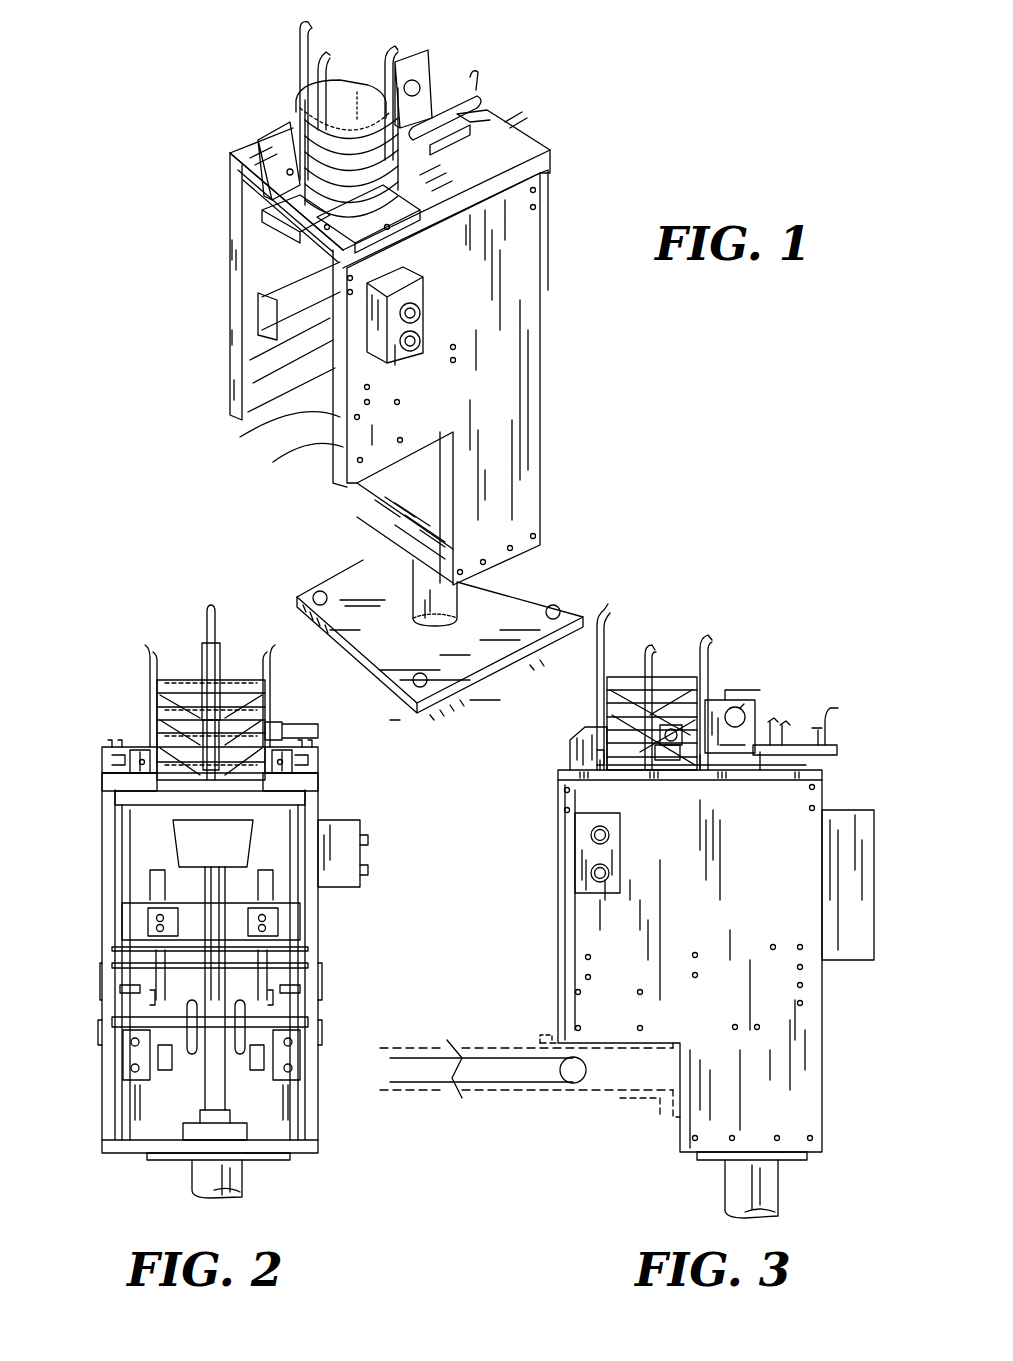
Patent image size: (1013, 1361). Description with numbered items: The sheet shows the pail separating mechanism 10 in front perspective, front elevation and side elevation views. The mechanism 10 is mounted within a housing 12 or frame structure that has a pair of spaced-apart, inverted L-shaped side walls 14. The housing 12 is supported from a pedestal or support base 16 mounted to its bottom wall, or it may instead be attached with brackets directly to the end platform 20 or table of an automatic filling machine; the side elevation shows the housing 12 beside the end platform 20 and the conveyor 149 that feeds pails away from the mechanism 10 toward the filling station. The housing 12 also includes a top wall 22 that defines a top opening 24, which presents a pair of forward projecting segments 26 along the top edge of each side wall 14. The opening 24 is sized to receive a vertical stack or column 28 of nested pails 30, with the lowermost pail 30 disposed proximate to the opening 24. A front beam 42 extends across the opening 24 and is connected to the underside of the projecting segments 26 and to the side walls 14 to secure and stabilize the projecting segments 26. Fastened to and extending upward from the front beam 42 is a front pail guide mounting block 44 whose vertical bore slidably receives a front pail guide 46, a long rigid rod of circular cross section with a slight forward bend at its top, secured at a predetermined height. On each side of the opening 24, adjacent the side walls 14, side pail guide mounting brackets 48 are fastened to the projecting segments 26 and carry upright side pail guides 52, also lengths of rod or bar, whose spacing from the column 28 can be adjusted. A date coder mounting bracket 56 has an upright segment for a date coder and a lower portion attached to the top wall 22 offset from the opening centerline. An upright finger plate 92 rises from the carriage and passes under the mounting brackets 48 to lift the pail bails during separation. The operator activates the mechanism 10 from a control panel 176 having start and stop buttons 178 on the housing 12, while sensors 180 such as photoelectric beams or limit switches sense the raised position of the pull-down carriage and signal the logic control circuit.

In FIG. 1, the pail separating mechanism 10 is at (600, 112).
In FIG. 1, the housing 12 is at (552, 361).
In FIG. 2, the housing 12 is at (326, 1125).
In FIG. 3, the housing 12 is at (836, 1052).
In FIG. 1, the side walls 14 is at (291, 280).
In FIG. 2, the side walls 14 is at (108, 890).
In FIG. 3, the side walls 14 is at (735, 900).
In FIG. 1, the support base 16 is at (452, 599).
In FIG. 2, the support base 16 is at (230, 1175).
In FIG. 3, the support base 16 is at (775, 1188).
In FIG. 3, the end platform 20 is at (636, 1078).
In FIG. 1, the top wall 22 is at (513, 172).
In FIG. 3, the top wall 22 is at (813, 775).
In FIG. 1, the top opening 24 is at (263, 188).
In FIG. 2, the top opening 24 is at (133, 778).
In FIG. 1, the forward projecting segments 26 is at (262, 150).
In FIG. 2, the forward projecting segments 26 is at (107, 778).
In FIG. 3, the forward projecting segments 26 is at (610, 778).
In FIG. 1, the column 28 is at (364, 66).
In FIG. 2, the column 28 is at (172, 660).
In FIG. 3, the column 28 is at (676, 648).
In FIG. 2, the pails 30 is at (233, 707).
In FIG. 1, the front beam 42 is at (268, 220).
In FIG. 2, the front beam 42 is at (174, 807).
In FIG. 1, the front pail guide mounting block 44 is at (260, 158).
In FIG. 2, the front pail guide mounting block 44 is at (245, 794).
In FIG. 3, the front pail guide mounting block 44 is at (585, 740).
In FIG. 1, the front pail guide 46 is at (300, 48).
In FIG. 2, the front pail guide 46 is at (204, 623).
In FIG. 3, the front pail guide 46 is at (612, 606).
In FIG. 2, the side pail guide mounting brackets 48 is at (103, 760).
In FIG. 1, the side pail guides 52 is at (327, 63).
In FIG. 2, the side pail guides 52 is at (150, 653).
In FIG. 3, the side pail guides 52 is at (652, 646).
In FIG. 1, the date coder mounting bracket 56 is at (420, 77).
In FIG. 3, the date coder mounting bracket 56 is at (740, 705).
In FIG. 2, the upright finger plate 92 is at (140, 748).
In FIG. 3, the conveyor 149 is at (428, 1066).
In FIG. 1, the control panel 176 is at (417, 290).
In FIG. 3, the control panel 176 is at (620, 838).
In FIG. 1, the start and stop buttons 178 is at (412, 353).
In FIG. 3, the start and stop buttons 178 is at (607, 871).
In FIG. 1, the sensors 180 is at (505, 121).
In FIG. 2, the sensors 180 is at (317, 730).
In FIG. 3, the sensors 180 is at (795, 731).